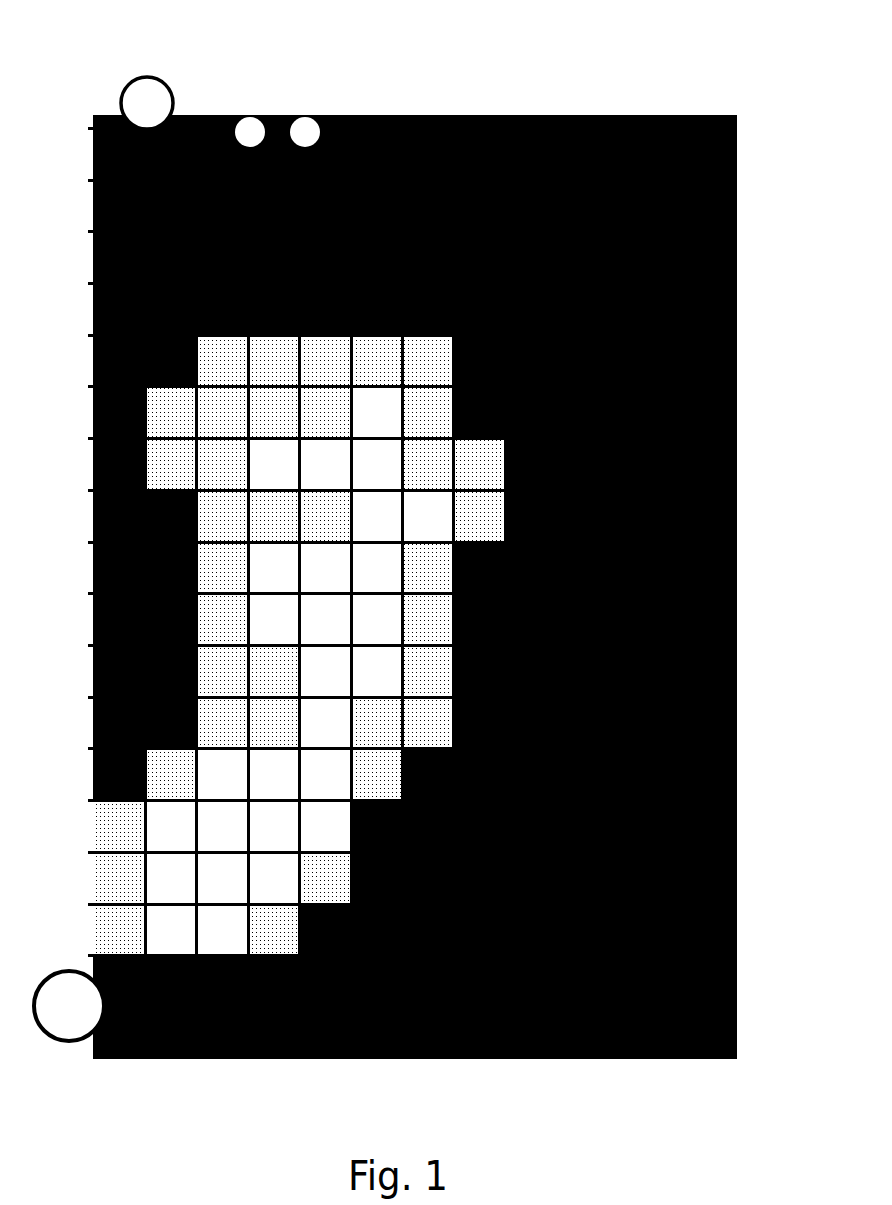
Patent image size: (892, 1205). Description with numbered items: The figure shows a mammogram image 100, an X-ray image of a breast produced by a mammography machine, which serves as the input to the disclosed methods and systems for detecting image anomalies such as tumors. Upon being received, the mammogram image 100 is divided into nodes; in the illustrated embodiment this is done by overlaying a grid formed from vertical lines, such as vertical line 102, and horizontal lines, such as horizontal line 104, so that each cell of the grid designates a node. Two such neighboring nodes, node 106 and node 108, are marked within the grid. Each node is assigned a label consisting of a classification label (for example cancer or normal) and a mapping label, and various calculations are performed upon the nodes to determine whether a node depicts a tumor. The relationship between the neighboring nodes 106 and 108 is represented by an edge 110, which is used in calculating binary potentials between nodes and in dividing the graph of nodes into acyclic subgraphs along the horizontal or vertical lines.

The mammogram image 100 is at (727, 87).
The vertical line 102 is at (147, 103).
The horizontal line 104 is at (69, 1006).
The node 106 is at (241, 124).
The node 108 is at (313, 125).
The edge 110 is at (277, 106).